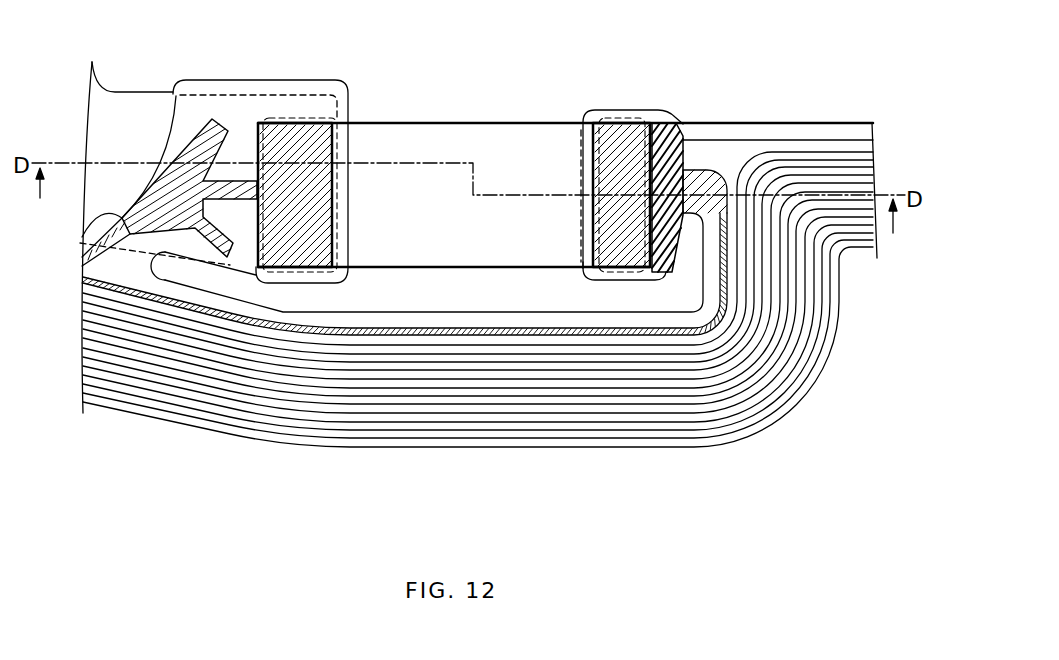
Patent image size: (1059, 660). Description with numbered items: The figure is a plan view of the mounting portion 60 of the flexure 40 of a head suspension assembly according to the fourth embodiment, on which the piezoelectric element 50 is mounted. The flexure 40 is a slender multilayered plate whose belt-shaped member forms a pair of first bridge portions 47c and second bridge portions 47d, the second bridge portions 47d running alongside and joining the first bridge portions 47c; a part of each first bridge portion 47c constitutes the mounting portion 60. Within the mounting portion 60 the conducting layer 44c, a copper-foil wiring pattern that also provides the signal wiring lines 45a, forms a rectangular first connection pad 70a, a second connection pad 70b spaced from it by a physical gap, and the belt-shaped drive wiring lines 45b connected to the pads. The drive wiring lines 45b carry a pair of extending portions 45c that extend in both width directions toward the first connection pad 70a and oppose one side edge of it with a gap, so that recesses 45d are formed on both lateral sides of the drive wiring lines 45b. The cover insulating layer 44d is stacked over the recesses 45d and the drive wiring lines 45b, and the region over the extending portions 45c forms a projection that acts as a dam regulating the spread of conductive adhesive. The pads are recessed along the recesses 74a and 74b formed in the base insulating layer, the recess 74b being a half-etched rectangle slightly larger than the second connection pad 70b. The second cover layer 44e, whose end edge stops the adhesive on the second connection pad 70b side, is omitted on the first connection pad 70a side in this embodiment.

The flexure 40 is at (512, 446).
The conducting layer 44c is at (120, 211).
The cover insulating layer 44d is at (187, 110).
The second cover layer 44e is at (660, 114).
The signal wiring lines 45a is at (388, 395).
The drive wiring lines 45b is at (693, 170).
The extending portions 45c is at (230, 147).
The recesses 45d is at (240, 152).
The first bridge portions 47c is at (137, 110).
The second bridge portions 47d is at (623, 400).
The piezoelectric element 50 is at (437, 140).
The mounting portion 60 is at (384, 96).
The first connection pad 70a is at (278, 135).
The second connection pad 70b is at (637, 117).
The recess 74a is at (300, 110).
The recess 74b is at (613, 115).